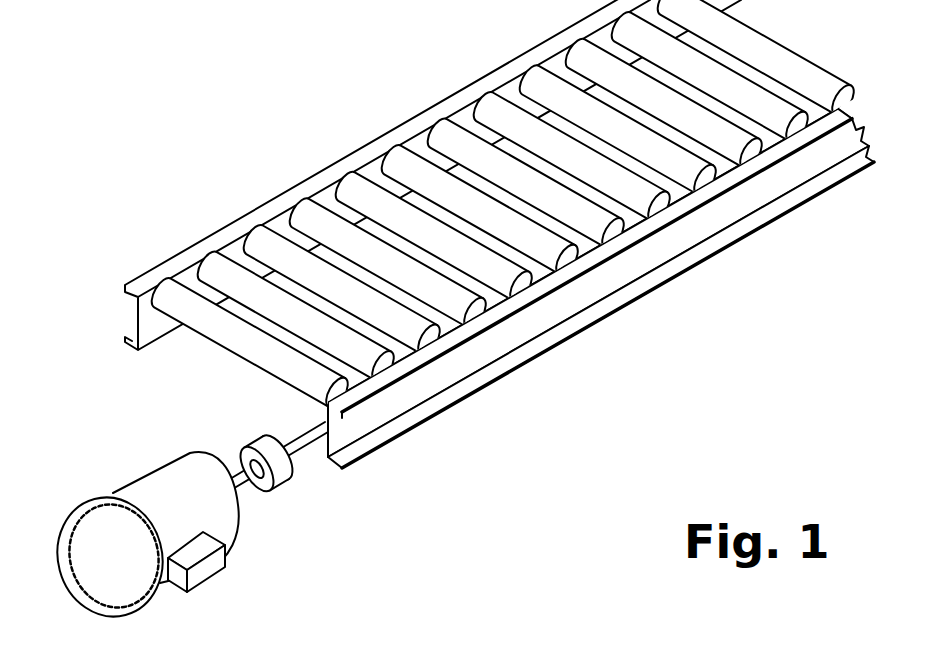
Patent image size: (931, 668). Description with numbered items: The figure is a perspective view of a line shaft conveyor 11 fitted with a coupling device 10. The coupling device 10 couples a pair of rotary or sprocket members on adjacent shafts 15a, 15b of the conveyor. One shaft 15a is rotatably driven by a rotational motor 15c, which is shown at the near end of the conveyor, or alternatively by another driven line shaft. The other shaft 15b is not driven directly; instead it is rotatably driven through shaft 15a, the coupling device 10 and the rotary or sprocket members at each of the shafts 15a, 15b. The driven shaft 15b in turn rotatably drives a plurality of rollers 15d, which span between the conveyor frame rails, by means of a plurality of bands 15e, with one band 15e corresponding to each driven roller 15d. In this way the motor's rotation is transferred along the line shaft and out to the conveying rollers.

The coupling device 10 is at (459, 314).
The line shaft conveyor 11 is at (346, 153).
The shaft 15a is at (240, 532).
The shaft 15b is at (313, 450).
The rotational motor 15c is at (163, 489).
The rollers 15d is at (224, 352).
The bands 15e is at (322, 405).